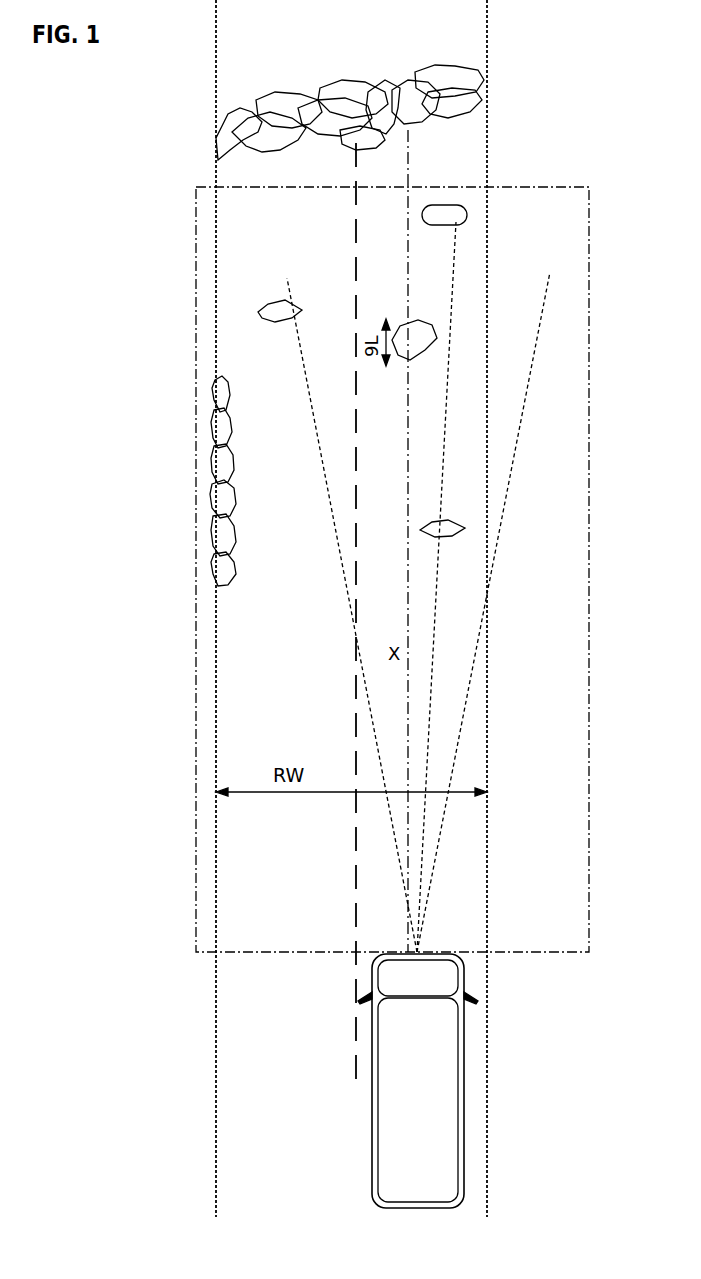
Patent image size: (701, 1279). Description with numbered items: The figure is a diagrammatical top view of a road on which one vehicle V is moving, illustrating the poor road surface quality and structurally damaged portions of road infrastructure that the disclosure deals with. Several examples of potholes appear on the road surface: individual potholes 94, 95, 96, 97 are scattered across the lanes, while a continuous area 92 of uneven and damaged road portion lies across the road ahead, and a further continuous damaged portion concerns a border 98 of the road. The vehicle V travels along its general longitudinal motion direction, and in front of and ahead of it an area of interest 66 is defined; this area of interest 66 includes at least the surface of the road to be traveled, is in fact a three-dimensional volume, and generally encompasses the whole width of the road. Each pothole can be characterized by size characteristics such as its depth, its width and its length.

The area of interest 66 is at (590, 402).
The continuous area of uneven and damaged road portion 92 is at (473, 103).
The individual pothole 94 is at (468, 211).
The individual pothole 95 is at (430, 345).
The individual pothole 96 is at (455, 530).
The individual pothole 97 is at (263, 308).
The border of the road 98 is at (213, 473).
The vehicle V is at (470, 1087).